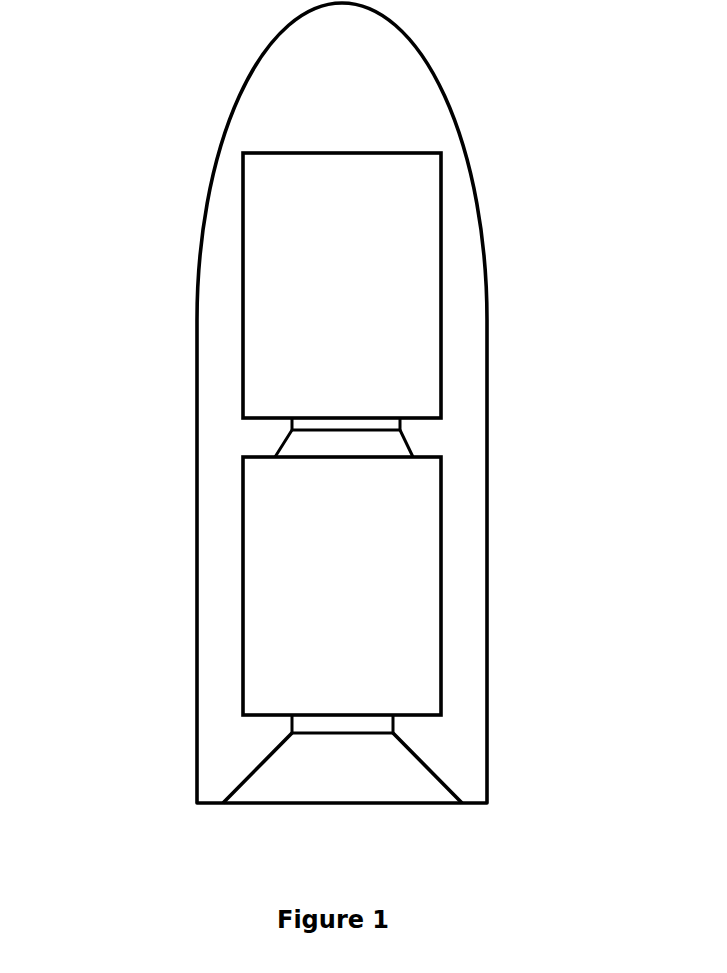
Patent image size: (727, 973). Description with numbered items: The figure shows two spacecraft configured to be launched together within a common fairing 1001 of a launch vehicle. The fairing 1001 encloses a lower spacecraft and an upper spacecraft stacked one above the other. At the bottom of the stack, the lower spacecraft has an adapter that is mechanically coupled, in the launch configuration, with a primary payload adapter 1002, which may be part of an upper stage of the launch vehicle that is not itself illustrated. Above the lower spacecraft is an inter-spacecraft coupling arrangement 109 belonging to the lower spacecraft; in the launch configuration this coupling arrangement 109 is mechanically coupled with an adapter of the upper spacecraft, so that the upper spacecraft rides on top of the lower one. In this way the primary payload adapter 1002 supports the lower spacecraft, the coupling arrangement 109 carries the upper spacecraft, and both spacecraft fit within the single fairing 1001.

The common fairing 1001 is at (448, 98).
The inter-spacecraft coupling arrangement 109 is at (413, 447).
The primary payload adapter 1002 is at (415, 752).